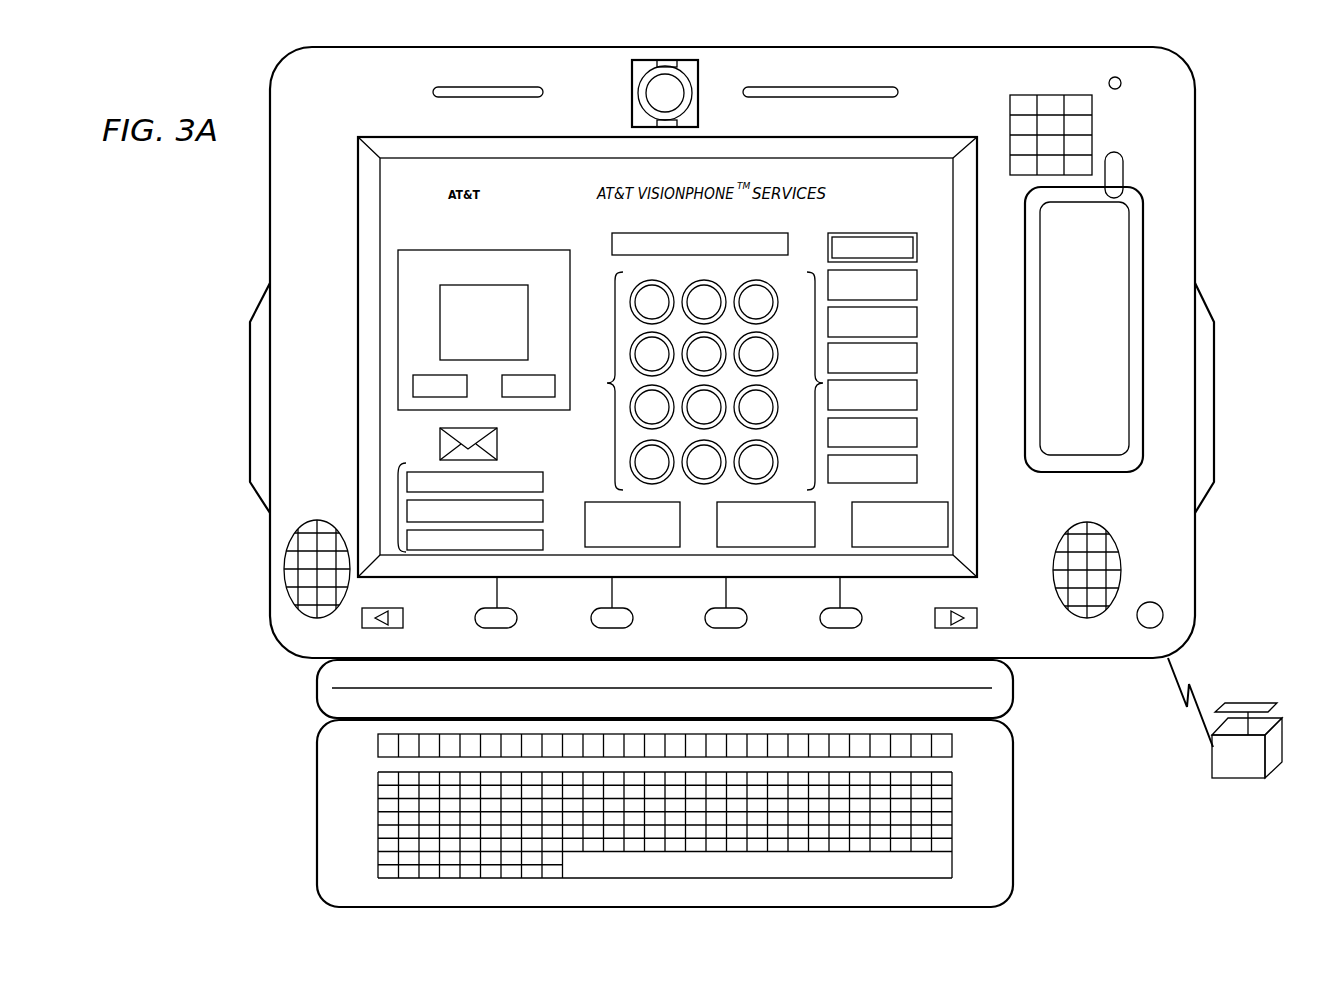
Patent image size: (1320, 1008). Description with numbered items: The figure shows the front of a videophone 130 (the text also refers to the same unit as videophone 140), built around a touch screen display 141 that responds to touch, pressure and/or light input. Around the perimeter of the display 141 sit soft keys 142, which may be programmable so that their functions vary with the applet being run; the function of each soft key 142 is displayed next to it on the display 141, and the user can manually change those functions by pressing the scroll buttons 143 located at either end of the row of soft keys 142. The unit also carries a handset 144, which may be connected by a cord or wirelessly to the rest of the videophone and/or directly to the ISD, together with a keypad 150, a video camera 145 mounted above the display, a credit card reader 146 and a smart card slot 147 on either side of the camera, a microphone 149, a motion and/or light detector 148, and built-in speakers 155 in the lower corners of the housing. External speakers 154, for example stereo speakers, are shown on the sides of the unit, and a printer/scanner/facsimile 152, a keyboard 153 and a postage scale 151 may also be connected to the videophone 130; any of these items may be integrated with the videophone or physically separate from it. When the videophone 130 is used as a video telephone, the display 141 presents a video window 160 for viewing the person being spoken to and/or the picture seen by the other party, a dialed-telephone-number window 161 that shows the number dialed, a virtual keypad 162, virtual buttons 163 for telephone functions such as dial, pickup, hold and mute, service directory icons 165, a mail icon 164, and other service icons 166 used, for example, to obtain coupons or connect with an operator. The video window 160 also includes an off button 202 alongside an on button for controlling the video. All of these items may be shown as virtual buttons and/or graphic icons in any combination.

The videophone 130 is at (1216, 69).
The videophone 140 is at (1195, 130).
The touch screen display 141 is at (368, 276).
The soft keys 142 is at (518, 618).
The scroll buttons 143 is at (403, 618).
The handset 144 is at (1102, 326).
The video camera 145 is at (632, 72).
The credit card reader 146 is at (466, 98).
The smart card slot 147 is at (866, 98).
The motion and/or light detector 148 is at (1121, 86).
The microphone 149 is at (1147, 601).
The keypad 150 is at (1026, 94).
The postage scale 151 is at (1210, 765).
The printer/scanner/facsimile 152 is at (1013, 686).
The keyboard 153 is at (1013, 812).
The external speakers 154 is at (250, 410).
The built-in speaker 155 is at (288, 596).
The video window 160 is at (504, 326).
The dialed-telephone-number window 161 is at (714, 240).
The virtual keypad 162 is at (677, 381).
The virtual buttons 163 is at (846, 361).
The mail icon 164 is at (497, 446).
The service directory icons 165 is at (394, 517).
The service icons 166 is at (597, 501).
The off button 202 is at (552, 392).